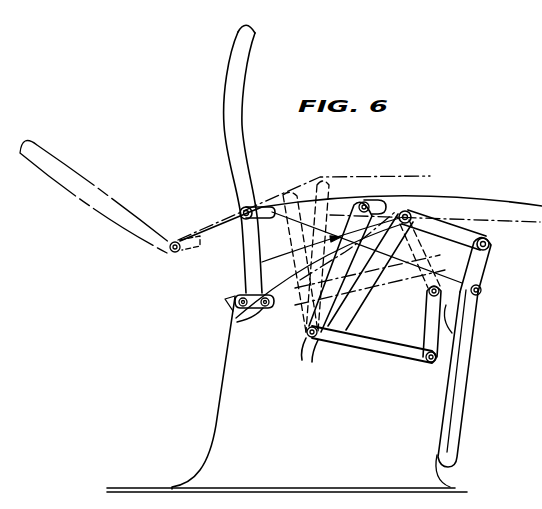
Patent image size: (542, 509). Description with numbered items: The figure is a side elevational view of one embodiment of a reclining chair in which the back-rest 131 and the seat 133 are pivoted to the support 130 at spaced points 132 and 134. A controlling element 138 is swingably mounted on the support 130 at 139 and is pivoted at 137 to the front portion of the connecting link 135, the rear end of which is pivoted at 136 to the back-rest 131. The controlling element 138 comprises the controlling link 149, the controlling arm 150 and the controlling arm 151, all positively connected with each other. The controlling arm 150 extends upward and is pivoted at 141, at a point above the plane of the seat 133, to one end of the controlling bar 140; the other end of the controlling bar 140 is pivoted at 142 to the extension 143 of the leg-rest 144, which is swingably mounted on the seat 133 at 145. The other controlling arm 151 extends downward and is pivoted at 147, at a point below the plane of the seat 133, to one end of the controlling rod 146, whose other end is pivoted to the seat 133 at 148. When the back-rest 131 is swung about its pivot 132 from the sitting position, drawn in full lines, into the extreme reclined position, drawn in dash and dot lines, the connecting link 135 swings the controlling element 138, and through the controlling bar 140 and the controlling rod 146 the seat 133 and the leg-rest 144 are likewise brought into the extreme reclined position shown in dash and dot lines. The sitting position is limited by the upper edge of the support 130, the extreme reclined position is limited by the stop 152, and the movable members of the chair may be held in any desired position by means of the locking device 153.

The support 130 is at (212, 388).
The back-rest 131 is at (237, 130).
The pivot point of back-rest 132 is at (232, 308).
The seat 133 is at (433, 312).
The pivot point of seat 134 is at (237, 322).
The connecting link 135 is at (310, 205).
The pivot of connecting link to back-rest 136 is at (240, 210).
The pivot of controlling element to connecting link 137 is at (372, 203).
The controlling element 138 is at (298, 250).
The pivot of controlling element on support 139 is at (302, 347).
The controlling bar 140 is at (455, 232).
The pivot of controlling bar to controlling arm 141 is at (408, 212).
The pivot of controlling bar to extension 142 is at (490, 243).
The extension of leg-rest 143 is at (488, 266).
The leg-rest 144 is at (462, 397).
The pivot of leg-rest on seat 145 is at (483, 290).
The controlling rod 146 is at (443, 325).
The pivot of controlling rod to controlling arm 147 is at (425, 368).
The pivot of controlling rod to seat 148 is at (460, 265).
The controlling link 149 is at (278, 308).
The controlling arm 150 is at (410, 262).
The controlling arm 151 is at (373, 352).
The stop 152 is at (226, 303).
The locking device 153 is at (265, 198).